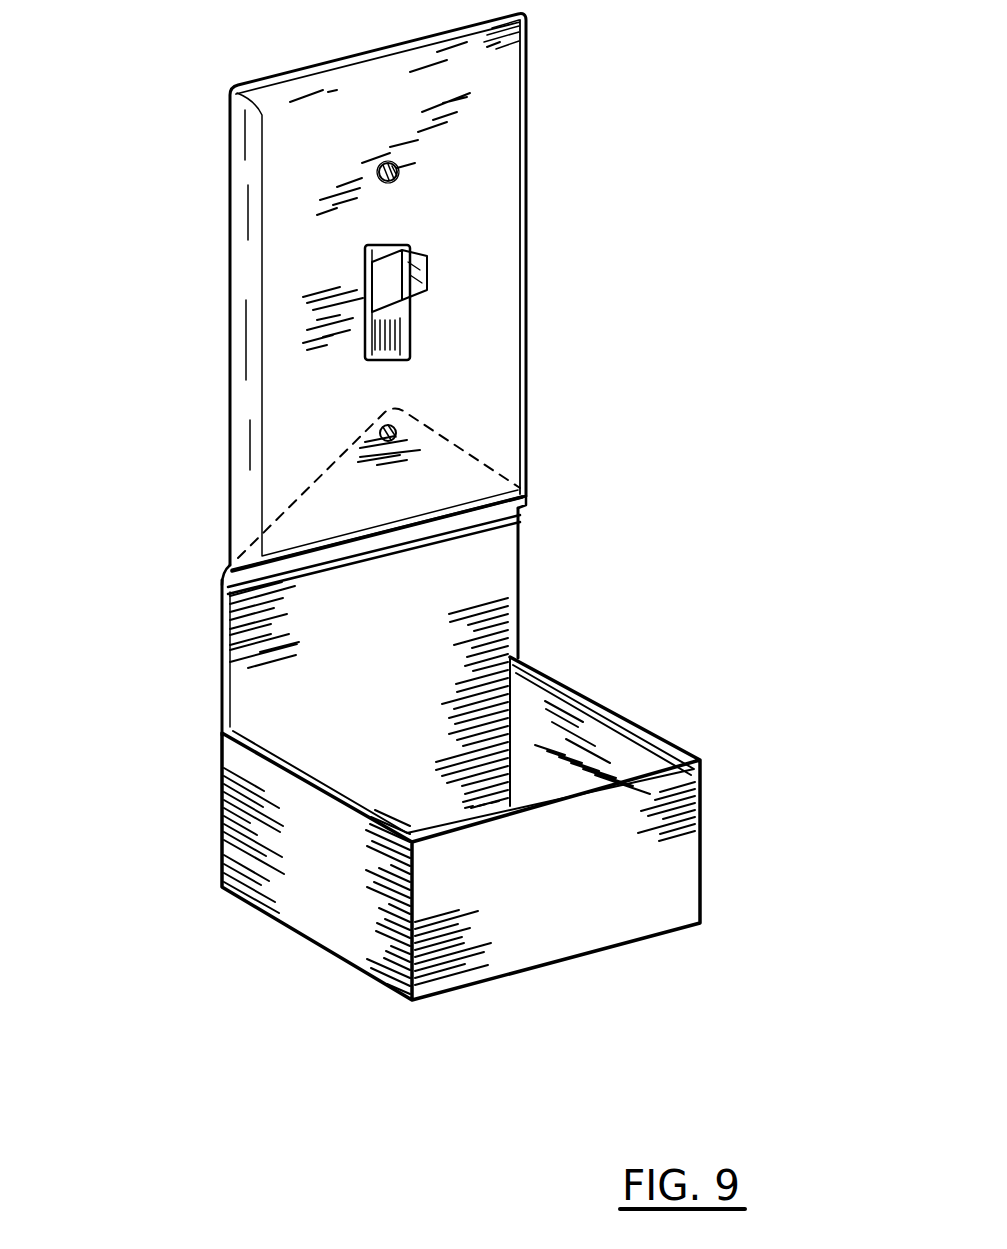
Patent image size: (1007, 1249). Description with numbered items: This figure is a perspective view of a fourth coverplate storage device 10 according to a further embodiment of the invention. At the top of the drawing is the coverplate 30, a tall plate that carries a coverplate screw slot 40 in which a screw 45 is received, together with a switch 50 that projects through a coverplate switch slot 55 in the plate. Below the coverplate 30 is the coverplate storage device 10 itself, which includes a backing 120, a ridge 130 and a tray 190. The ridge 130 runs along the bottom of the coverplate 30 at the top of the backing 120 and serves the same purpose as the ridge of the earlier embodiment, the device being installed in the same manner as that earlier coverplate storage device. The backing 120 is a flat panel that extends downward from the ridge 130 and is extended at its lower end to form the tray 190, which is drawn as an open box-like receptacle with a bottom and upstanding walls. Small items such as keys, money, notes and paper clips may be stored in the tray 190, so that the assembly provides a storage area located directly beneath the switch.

The coverplate storage device 10 is at (185, 668).
The coverplate 30 is at (490, 74).
The coverplate screw slot 40 is at (384, 168).
The screw 45 is at (397, 173).
The switch 50 is at (385, 281).
The coverplate switch slot 55 is at (410, 327).
The backing 120 is at (473, 598).
The ridge 130 is at (523, 508).
The tray 190 is at (668, 862).